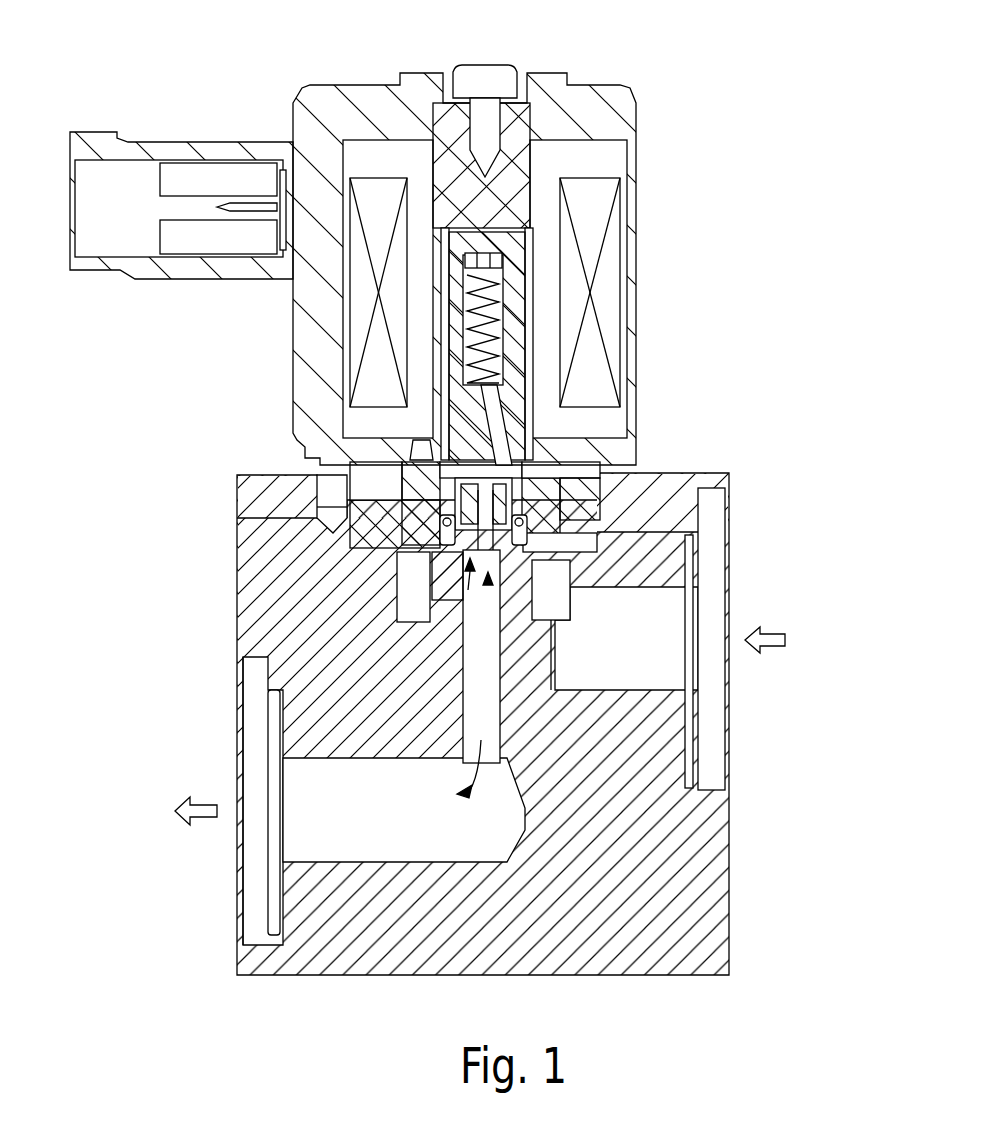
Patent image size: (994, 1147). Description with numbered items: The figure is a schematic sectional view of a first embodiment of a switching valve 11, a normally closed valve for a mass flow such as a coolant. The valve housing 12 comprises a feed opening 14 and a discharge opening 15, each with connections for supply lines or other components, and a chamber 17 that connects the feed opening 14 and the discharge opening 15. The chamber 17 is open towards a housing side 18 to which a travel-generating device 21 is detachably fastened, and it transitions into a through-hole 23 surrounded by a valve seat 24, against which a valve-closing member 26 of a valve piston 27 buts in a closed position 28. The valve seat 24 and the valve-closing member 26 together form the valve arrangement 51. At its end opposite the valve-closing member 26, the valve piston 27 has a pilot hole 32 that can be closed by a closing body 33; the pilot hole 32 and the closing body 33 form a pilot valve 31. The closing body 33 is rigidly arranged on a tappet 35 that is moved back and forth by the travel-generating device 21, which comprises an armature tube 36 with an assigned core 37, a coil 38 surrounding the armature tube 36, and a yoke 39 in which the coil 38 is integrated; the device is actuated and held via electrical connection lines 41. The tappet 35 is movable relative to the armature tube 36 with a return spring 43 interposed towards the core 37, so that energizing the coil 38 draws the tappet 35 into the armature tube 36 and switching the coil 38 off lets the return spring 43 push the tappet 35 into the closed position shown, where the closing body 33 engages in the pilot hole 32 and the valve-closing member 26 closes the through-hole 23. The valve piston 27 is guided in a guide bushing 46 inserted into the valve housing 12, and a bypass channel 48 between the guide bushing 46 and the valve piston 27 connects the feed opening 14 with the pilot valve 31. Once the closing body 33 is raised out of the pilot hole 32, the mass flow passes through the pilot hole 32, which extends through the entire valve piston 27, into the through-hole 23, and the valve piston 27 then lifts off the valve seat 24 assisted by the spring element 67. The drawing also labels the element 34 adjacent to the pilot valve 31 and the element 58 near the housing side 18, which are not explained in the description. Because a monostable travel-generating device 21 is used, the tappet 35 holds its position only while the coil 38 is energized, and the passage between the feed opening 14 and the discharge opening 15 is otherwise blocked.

The switching valve 11 is at (742, 300).
The valve housing 12 is at (345, 945).
The feed opening 14 is at (655, 648).
The discharge opening 15 is at (305, 833).
The chamber 17 is at (605, 588).
The housing side 18 is at (253, 470).
The travel-generating device 21 is at (712, 175).
The through-hole 23 is at (480, 692).
The valve seat 24 is at (400, 592).
The valve-closing member 26 is at (445, 590).
The valve piston 27 is at (390, 455).
The closed position 28 is at (425, 545).
The pilot valve 31 is at (512, 488).
The pilot hole 32 is at (600, 515).
The closing body 33 is at (508, 425).
The valve seat 34 is at (560, 495).
The tappet 35 is at (512, 395).
The armature tube 36 is at (532, 242).
The core 37 is at (535, 100).
The coil 38 is at (610, 190).
The yoke 39 is at (596, 95).
The electrical connection lines 41 is at (193, 125).
The return spring 43 is at (500, 305).
The guide bushing 46 is at (377, 521).
The bypass channel 48 is at (560, 482).
The valve arrangement 51 is at (556, 592).
The nut 58 is at (355, 468).
The spring element 67 is at (598, 542).